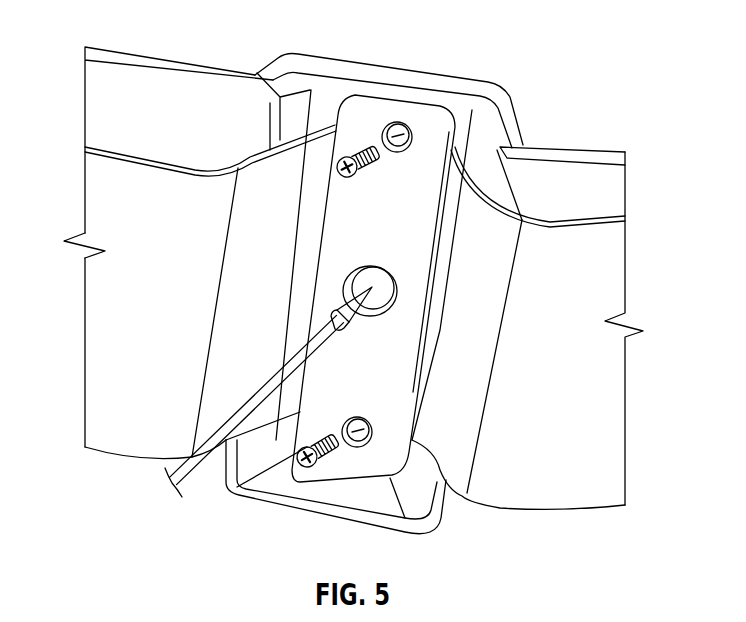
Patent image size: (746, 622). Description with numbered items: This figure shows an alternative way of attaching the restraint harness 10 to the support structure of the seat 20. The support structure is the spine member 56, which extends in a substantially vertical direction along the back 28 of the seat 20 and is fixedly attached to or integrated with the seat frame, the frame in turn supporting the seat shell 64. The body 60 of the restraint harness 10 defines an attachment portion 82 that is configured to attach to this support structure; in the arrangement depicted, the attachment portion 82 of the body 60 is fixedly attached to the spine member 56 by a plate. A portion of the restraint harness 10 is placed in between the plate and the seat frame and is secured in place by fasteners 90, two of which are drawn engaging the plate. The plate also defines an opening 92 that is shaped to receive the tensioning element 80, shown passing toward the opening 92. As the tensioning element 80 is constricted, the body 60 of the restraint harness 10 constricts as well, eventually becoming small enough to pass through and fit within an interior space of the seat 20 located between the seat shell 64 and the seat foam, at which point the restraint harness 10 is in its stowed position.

The restraint harness 10 is at (547, 318).
The seat 20 is at (610, 118).
The back 28 is at (118, 120).
The spine member 56 is at (405, 100).
The body 60 is at (569, 417).
The seat shell 64 is at (550, 150).
The tensioning element 80 is at (218, 447).
The attachment portion 82 is at (457, 228).
The fasteners 90 is at (338, 175).
The opening 92 is at (350, 290).